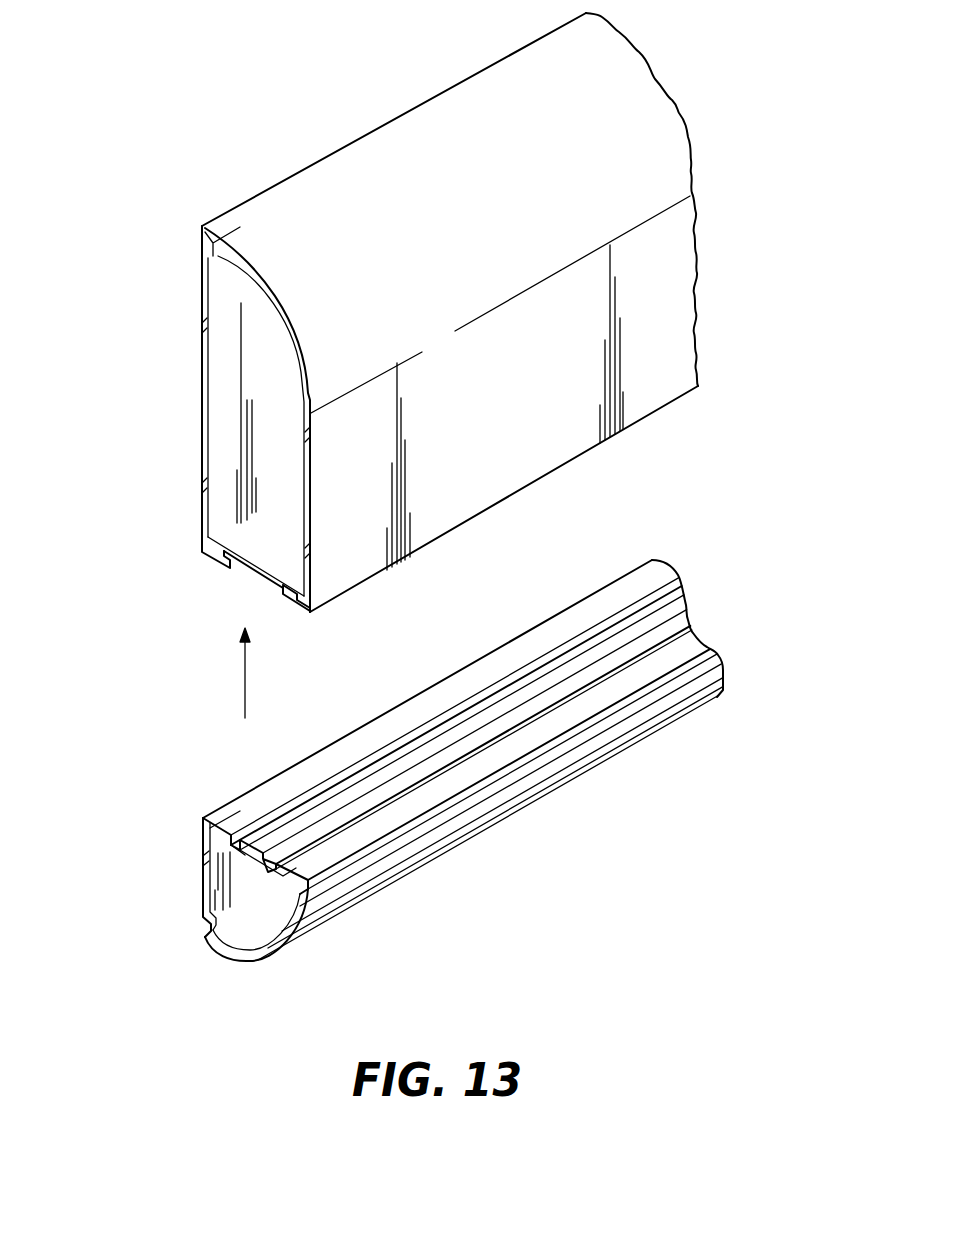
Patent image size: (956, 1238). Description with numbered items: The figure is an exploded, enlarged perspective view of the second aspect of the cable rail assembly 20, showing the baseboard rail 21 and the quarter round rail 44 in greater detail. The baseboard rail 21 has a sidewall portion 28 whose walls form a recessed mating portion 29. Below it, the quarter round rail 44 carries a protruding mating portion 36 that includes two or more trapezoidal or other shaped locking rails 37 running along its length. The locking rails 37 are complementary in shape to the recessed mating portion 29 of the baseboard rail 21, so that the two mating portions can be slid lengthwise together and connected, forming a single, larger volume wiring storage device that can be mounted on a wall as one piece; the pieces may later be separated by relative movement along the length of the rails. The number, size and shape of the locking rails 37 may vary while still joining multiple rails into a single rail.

The cable rail assembly 20 is at (203, 160).
The baseboard rail 21 is at (703, 230).
The sidewall portion 28 is at (212, 530).
The recessed mating portion 29 is at (250, 574).
The protruding mating portion 36 is at (253, 860).
The locking rails 37 is at (390, 778).
The quarter round rail 44 is at (500, 838).